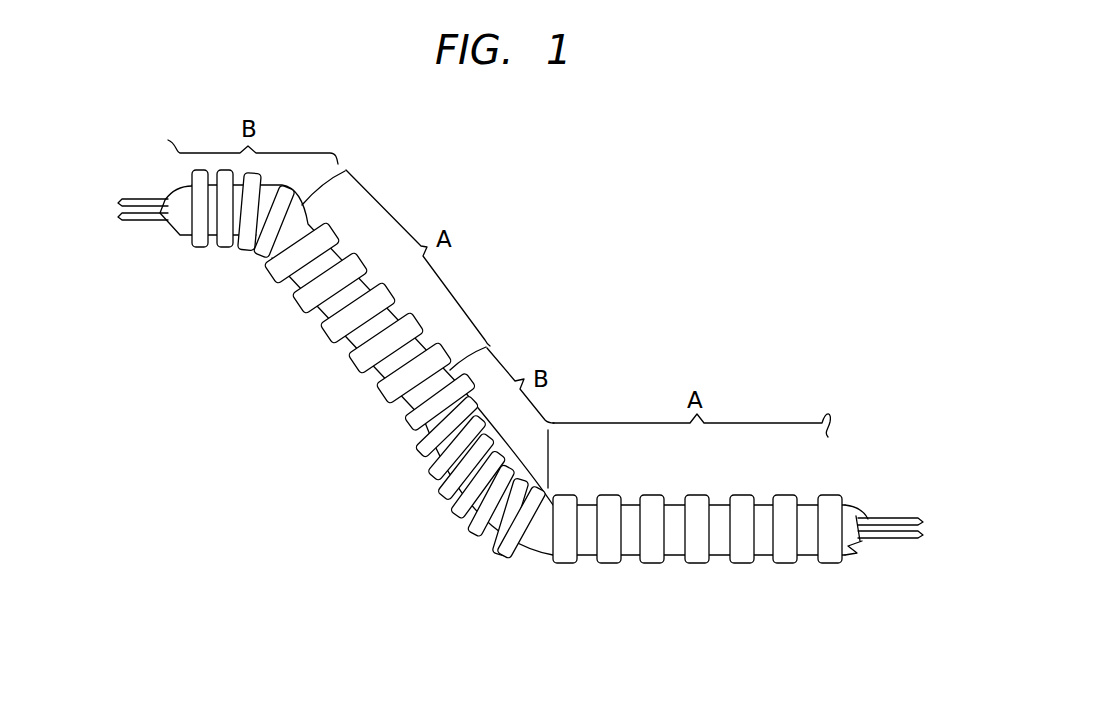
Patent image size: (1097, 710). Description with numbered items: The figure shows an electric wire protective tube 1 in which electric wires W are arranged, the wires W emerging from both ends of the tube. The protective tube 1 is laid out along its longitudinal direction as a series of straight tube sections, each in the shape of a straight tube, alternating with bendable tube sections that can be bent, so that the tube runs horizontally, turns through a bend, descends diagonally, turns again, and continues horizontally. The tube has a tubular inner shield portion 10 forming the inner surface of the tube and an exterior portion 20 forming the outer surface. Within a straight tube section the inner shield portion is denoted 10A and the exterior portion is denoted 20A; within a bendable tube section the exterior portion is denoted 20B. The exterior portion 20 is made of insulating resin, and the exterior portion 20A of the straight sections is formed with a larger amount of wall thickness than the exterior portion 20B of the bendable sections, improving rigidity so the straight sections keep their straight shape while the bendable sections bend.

The electric wire protective tube 1 is at (622, 297).
The inner shield portion 10 is at (460, 341).
The inner shield portion 10A is at (171, 194).
The exterior portion 20 is at (480, 409).
The exterior portion 20A is at (305, 357).
The exterior portion 20B is at (183, 268).
The electric wires W is at (875, 521).